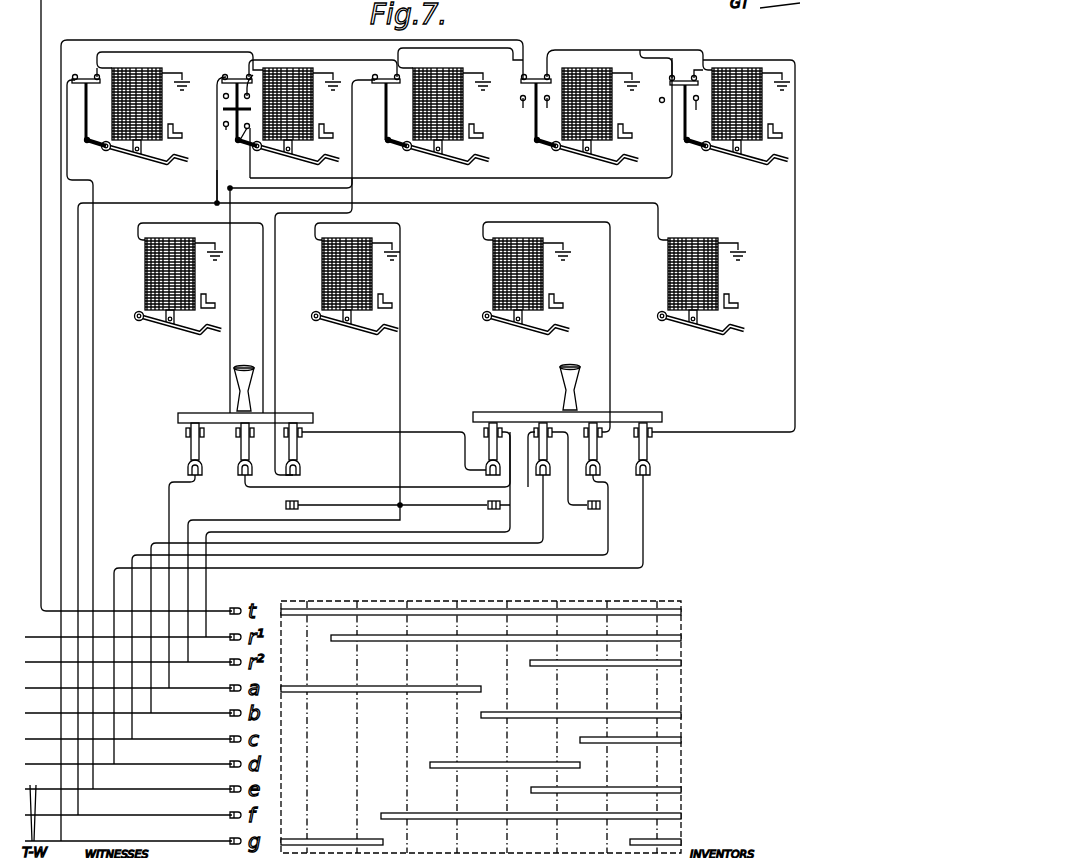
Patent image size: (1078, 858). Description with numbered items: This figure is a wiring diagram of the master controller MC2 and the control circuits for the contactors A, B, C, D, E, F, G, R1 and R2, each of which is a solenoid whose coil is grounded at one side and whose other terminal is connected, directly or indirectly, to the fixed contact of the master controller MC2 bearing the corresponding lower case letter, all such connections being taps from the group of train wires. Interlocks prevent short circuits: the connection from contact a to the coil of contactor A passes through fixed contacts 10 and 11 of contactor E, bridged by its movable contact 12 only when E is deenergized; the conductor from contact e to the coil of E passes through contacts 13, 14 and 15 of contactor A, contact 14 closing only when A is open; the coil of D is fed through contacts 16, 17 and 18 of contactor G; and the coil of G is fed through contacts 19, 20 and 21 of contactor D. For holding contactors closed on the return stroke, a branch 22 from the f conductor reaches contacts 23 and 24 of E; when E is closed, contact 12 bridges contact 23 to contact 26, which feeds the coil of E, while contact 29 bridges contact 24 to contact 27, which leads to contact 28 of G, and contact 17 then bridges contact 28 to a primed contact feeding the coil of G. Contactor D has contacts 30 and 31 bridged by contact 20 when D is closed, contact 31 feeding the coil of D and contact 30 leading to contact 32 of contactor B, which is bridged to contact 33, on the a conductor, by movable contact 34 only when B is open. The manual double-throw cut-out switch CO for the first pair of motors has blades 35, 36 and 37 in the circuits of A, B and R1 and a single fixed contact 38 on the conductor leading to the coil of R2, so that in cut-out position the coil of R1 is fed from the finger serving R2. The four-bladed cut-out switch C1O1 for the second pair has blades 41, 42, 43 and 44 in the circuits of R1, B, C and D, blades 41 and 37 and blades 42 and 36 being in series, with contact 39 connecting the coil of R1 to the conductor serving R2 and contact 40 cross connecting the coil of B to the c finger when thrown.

The fixed contact 10 is at (222, 70).
The fixed contact 11 is at (238, 100).
The movable contact 12 is at (223, 96).
The contact 13 is at (74, 76).
The contact 14 is at (85, 90).
The contact 15 is at (97, 80).
The contact 16 is at (669, 78).
The contact 17 is at (683, 86).
The contact 18 is at (692, 77).
The contact 19 is at (521, 77).
The contact 20 is at (522, 84).
The contact 21 is at (545, 76).
The branch conductor 22 is at (217, 177).
The contact 23 is at (223, 121).
The contact 24 is at (224, 128).
The contact 26 is at (252, 76).
The contact 27 is at (246, 130).
The contact 28 is at (661, 102).
The contact 29 is at (223, 110).
The contact 30 is at (514, 110).
The contact 31 is at (548, 110).
The contact 32 is at (389, 70).
The contact 33 is at (366, 70).
The movable contact 34 is at (384, 85).
The switch blade 35 is at (199, 450).
The switch blade 36 is at (249, 450).
The switch blade 37 is at (297, 450).
The fixed contact 38 is at (286, 506).
The fixed contact 39 is at (493, 510).
The fixed contact 40 is at (593, 510).
The switch blade 41 is at (489, 452).
The switch blade 42 is at (547, 452).
The switch blade 43 is at (597, 452).
The switch blade 44 is at (647, 452).
The contactor A is at (130, 75).
The contactor B is at (438, 78).
The contactor C is at (495, 272).
The contactor D is at (578, 78).
The contactor E is at (290, 78).
The contactor F is at (670, 272).
The contactor G is at (730, 78).
The resistance contactor R1 is at (147, 272).
The resistance contactor R2 is at (324, 272).
The cut-out switch CO is at (212, 405).
The cut-out switch C1O1 is at (528, 405).
The master controller MC2 is at (665, 688).